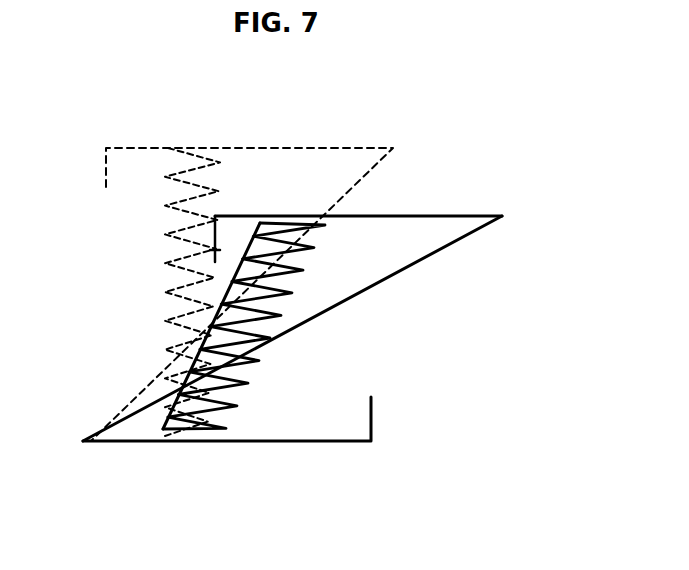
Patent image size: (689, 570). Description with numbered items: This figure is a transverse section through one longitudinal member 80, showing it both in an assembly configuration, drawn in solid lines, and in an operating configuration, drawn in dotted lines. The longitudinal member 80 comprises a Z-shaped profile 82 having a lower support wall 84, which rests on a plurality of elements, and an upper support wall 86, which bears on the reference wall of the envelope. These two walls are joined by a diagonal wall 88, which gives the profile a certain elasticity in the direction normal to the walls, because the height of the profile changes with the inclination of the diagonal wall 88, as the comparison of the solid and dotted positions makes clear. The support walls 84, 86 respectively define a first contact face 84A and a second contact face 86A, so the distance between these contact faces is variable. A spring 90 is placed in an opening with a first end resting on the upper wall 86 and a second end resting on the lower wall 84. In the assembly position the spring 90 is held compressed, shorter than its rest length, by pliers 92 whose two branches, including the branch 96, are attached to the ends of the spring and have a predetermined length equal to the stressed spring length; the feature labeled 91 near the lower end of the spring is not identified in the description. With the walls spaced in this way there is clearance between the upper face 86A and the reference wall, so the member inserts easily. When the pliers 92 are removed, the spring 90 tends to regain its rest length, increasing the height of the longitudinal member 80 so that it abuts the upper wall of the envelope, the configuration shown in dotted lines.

The longitudinal member 80 is at (476, 114).
The Z-shaped profile 82 is at (422, 275).
The support wall 84 is at (305, 443).
The first contact face 84A is at (243, 450).
The support wall 86 is at (422, 216).
The second contact face 86A is at (367, 216).
The diagonal wall 88 is at (345, 302).
The spring 90 is at (265, 358).
The spring end 91 is at (163, 428).
The pliers 92 is at (182, 446).
The branch 96 is at (272, 216).